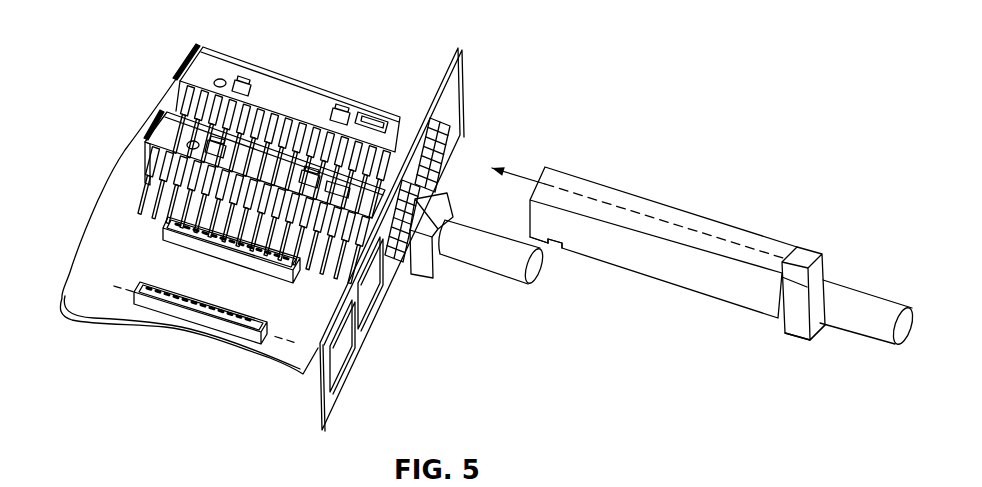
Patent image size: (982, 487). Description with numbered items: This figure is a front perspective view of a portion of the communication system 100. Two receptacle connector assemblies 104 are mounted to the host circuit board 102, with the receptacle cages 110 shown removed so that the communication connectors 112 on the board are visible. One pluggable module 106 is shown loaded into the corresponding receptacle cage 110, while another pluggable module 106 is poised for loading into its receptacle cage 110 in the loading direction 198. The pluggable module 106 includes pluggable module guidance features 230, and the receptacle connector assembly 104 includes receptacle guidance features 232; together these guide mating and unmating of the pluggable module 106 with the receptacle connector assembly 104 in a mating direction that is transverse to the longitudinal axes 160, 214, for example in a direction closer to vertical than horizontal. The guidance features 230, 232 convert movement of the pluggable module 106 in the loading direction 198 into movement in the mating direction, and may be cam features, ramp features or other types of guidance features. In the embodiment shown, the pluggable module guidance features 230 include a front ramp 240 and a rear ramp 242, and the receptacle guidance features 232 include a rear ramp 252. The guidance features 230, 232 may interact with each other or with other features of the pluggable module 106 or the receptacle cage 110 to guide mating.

The communication system 100 is at (562, 58).
The host circuit board 102 is at (93, 246).
The receptacle connector assembly 104 is at (268, 150).
The pluggable module 106 is at (428, 278).
The receptacle cage 110 is at (340, 98).
The communication connector 112 is at (178, 316).
The longitudinal axis 160 is at (284, 343).
The loading direction 198 is at (521, 175).
The longitudinal axis 214 is at (713, 237).
The pluggable module guidance feature 230 is at (783, 250).
The receptacle guidance feature 232 is at (160, 109).
The front ramp 240 is at (790, 250).
The rear ramp 242 is at (551, 249).
The rear ramp 252 is at (167, 110).